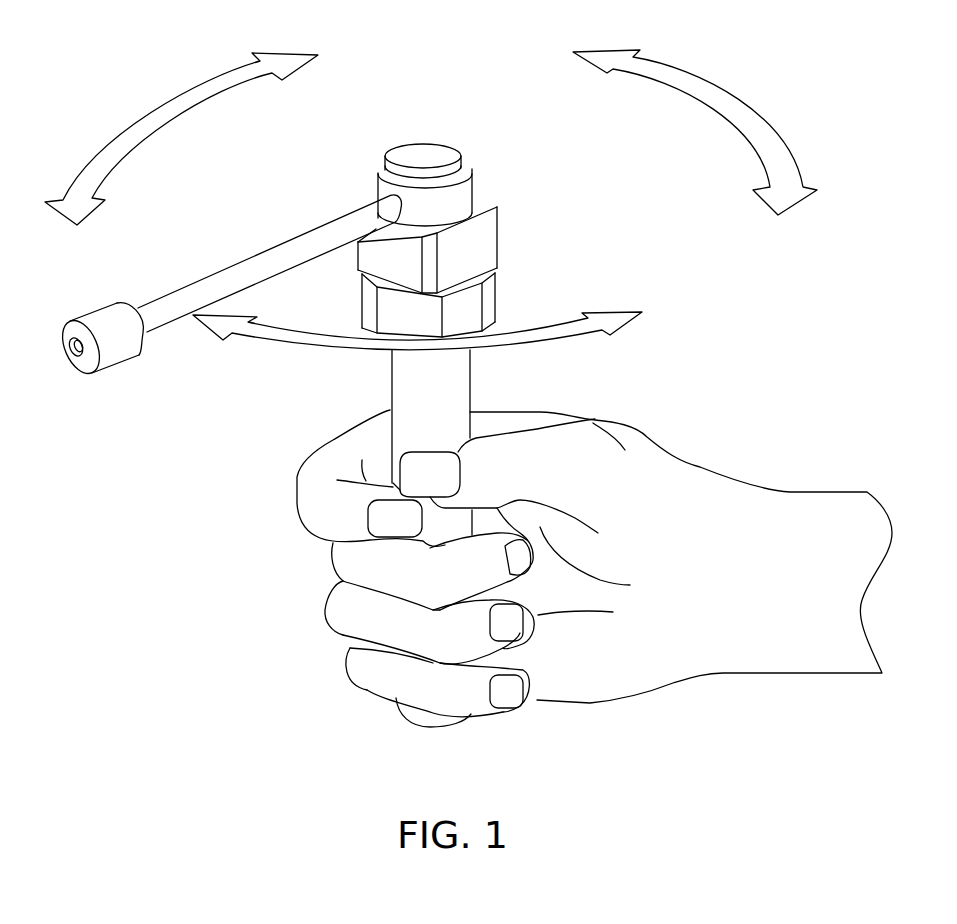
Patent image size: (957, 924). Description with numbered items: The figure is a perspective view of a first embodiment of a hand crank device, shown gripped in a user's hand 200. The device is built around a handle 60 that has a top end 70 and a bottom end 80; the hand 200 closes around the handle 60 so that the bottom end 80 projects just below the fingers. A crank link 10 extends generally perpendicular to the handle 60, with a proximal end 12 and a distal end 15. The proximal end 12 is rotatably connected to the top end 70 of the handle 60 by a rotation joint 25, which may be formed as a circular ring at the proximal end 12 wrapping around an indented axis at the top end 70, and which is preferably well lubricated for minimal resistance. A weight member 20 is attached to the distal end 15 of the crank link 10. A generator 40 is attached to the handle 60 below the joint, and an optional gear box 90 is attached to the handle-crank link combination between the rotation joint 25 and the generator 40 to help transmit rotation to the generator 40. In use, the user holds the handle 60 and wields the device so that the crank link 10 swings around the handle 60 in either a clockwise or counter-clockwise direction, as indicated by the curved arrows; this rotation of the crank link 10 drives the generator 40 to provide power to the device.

The crank link 10 is at (229, 229).
The proximal end 12 is at (360, 212).
The distal end 15 is at (155, 303).
The weight member 20 is at (120, 347).
The rotation joint 25 is at (470, 170).
The generator 40 is at (487, 296).
The handle 60 is at (458, 383).
The top end 70 is at (423, 158).
The bottom end 80 is at (417, 718).
The gear box 90 is at (487, 236).
The hand 200 is at (583, 468).